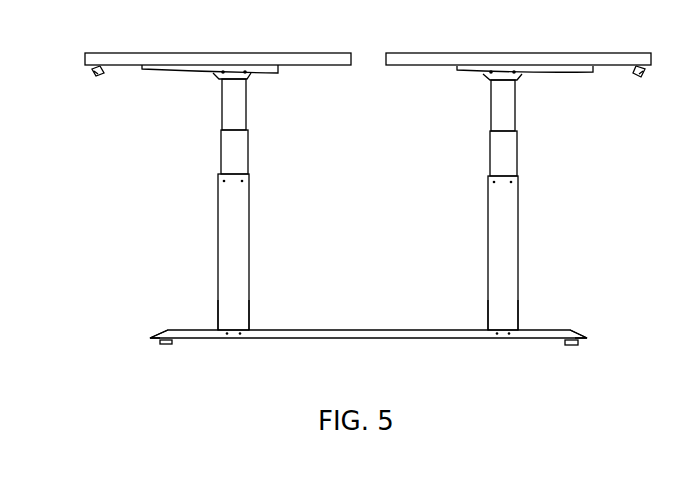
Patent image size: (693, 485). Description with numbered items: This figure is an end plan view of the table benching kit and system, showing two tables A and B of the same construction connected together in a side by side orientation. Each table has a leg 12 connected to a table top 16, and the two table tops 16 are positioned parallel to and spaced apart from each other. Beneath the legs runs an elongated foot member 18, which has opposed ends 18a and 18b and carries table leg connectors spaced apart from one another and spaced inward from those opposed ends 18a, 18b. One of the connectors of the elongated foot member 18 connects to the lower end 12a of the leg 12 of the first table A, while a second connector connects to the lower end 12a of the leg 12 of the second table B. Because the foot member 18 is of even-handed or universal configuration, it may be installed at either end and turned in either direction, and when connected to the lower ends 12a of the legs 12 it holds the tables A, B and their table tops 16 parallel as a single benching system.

The first table A is at (177, 50).
The second table B is at (585, 51).
The first leg 12 is at (228, 157).
The lower end of first leg 12a is at (226, 318).
The table top 16 is at (119, 67).
The elongated foot member 18 is at (413, 342).
The first end of elongated foot member 18a is at (169, 329).
The second end of elongated foot member 18b is at (578, 330).